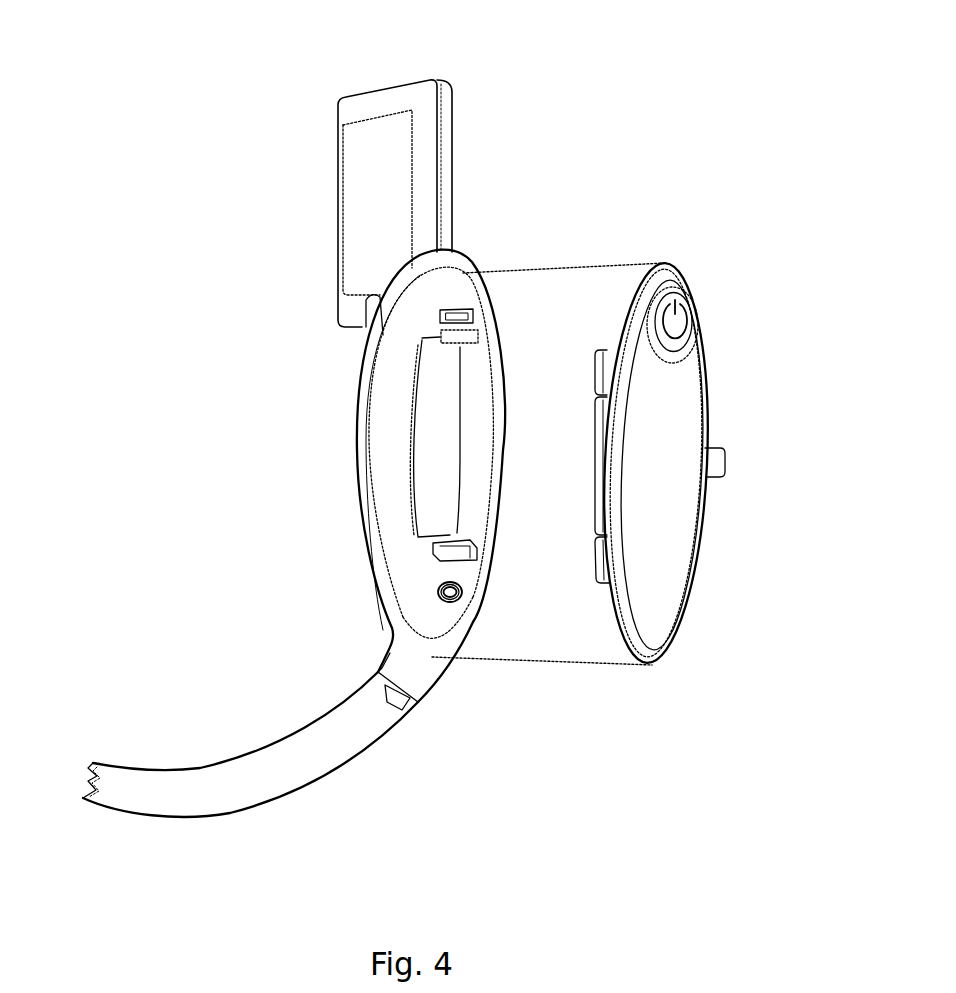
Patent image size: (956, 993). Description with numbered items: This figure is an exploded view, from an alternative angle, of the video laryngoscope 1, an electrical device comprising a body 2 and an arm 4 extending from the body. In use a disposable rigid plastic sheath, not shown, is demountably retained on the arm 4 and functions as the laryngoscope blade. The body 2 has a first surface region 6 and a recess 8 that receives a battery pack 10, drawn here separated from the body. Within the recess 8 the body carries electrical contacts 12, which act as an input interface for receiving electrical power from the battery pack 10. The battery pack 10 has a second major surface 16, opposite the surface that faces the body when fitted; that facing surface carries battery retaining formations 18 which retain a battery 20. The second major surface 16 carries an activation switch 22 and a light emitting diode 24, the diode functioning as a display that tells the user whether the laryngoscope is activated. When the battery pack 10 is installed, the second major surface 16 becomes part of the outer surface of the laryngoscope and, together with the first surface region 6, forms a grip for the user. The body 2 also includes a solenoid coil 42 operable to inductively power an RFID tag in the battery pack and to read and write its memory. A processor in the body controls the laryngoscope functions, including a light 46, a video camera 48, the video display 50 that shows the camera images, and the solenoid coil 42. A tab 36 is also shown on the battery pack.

The video laryngoscope 1 is at (132, 467).
The body 2 is at (273, 255).
The arm 4 is at (330, 765).
The first surface region 6 is at (450, 627).
The recess 8 is at (442, 477).
The battery pack 10 is at (672, 652).
The electrical contacts 12 is at (464, 328).
The second major surface 16 is at (675, 278).
The battery retaining formations 18 is at (602, 478).
The battery 20 is at (604, 356).
The activation switch 22 is at (683, 303).
The light emitting diode 24 is at (681, 337).
The tab 36 is at (722, 463).
The solenoid coil 42 is at (434, 597).
The light 46 is at (83, 798).
The video camera 48 is at (91, 764).
The video display 50 is at (423, 102).